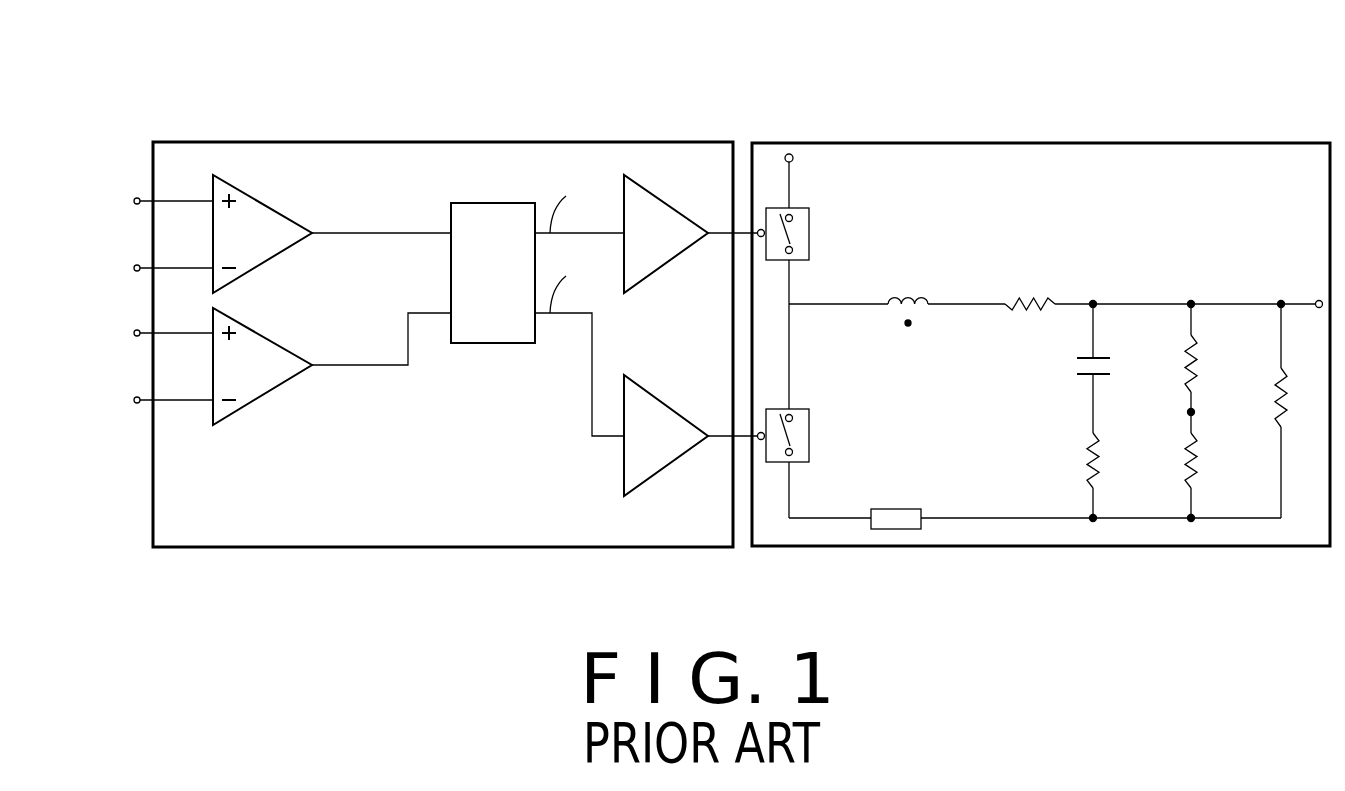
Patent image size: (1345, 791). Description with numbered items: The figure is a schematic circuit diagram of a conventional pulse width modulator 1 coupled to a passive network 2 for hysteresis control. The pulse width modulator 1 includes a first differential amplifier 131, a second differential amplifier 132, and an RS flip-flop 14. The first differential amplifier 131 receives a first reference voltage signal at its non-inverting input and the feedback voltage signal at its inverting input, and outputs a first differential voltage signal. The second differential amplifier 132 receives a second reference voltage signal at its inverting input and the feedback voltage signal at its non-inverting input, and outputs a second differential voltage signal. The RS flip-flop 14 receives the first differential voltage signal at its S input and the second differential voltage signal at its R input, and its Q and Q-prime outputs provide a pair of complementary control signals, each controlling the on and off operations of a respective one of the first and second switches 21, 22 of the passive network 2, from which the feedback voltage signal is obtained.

The pulse width modulator 1 is at (626, 140).
The passive network 2 is at (1124, 140).
The RS flip-flop 14 is at (470, 210).
The first switch 21 is at (806, 243).
The second switch 22 is at (809, 434).
The first differential amplifier 131 is at (267, 255).
The second differential amplifier 132 is at (263, 388).